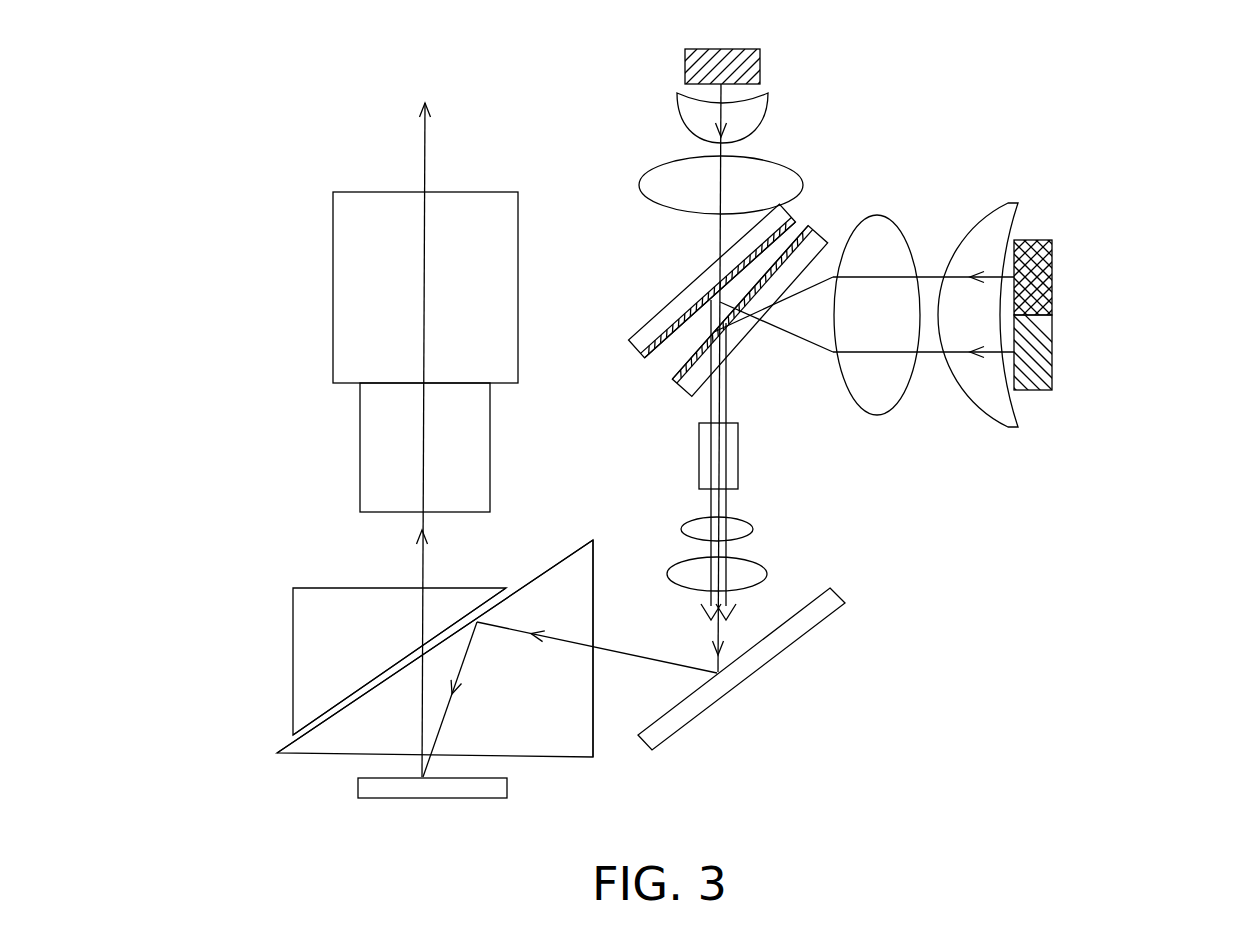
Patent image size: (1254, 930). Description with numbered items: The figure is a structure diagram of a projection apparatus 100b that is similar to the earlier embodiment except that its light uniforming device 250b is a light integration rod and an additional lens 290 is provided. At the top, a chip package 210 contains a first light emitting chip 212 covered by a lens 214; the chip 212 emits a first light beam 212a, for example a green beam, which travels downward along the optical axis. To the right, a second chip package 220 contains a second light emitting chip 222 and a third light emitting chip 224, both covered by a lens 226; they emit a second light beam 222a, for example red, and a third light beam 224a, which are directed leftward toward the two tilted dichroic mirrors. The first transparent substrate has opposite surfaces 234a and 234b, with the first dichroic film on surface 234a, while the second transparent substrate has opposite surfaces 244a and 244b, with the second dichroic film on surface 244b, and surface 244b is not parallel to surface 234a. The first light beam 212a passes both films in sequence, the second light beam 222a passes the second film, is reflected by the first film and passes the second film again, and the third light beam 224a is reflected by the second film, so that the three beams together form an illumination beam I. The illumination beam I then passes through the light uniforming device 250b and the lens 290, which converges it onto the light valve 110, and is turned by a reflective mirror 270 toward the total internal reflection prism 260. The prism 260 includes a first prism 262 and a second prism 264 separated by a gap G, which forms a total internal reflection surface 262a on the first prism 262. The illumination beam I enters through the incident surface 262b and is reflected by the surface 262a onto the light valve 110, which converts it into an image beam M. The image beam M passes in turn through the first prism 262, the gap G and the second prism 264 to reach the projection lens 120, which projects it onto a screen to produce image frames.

The projection apparatus 100b is at (1225, 854).
The light valve 110 is at (473, 790).
The projection lens 120 is at (346, 296).
The chip package 210 is at (784, 92).
The first light emitting chip 212 is at (756, 66).
The first light beam 212a is at (713, 148).
The lens 214 is at (769, 118).
The chip package 220 is at (1077, 316).
The second light emitting chip 222 is at (1038, 357).
The second light beam 222a is at (931, 352).
The third light emitting chip 224 is at (1042, 282).
The third light beam 224a is at (937, 275).
The lens 226 is at (1007, 413).
The surface 234a is at (654, 350).
The surface 234b is at (703, 272).
The surface 244a is at (743, 346).
The surface 244b is at (691, 367).
The light uniforming device 250b is at (735, 453).
The total internal reflection prism 260 is at (398, 698).
The first prism 262 is at (313, 745).
The total internal reflection surface 262a is at (363, 692).
The incident surface 262b is at (593, 729).
The second prism 264 is at (307, 650).
The reflective mirror 270 is at (677, 719).
The lens 290 is at (745, 527).
The image beam M is at (422, 566).
The gap G is at (512, 586).
The illumination beam I is at (640, 657).